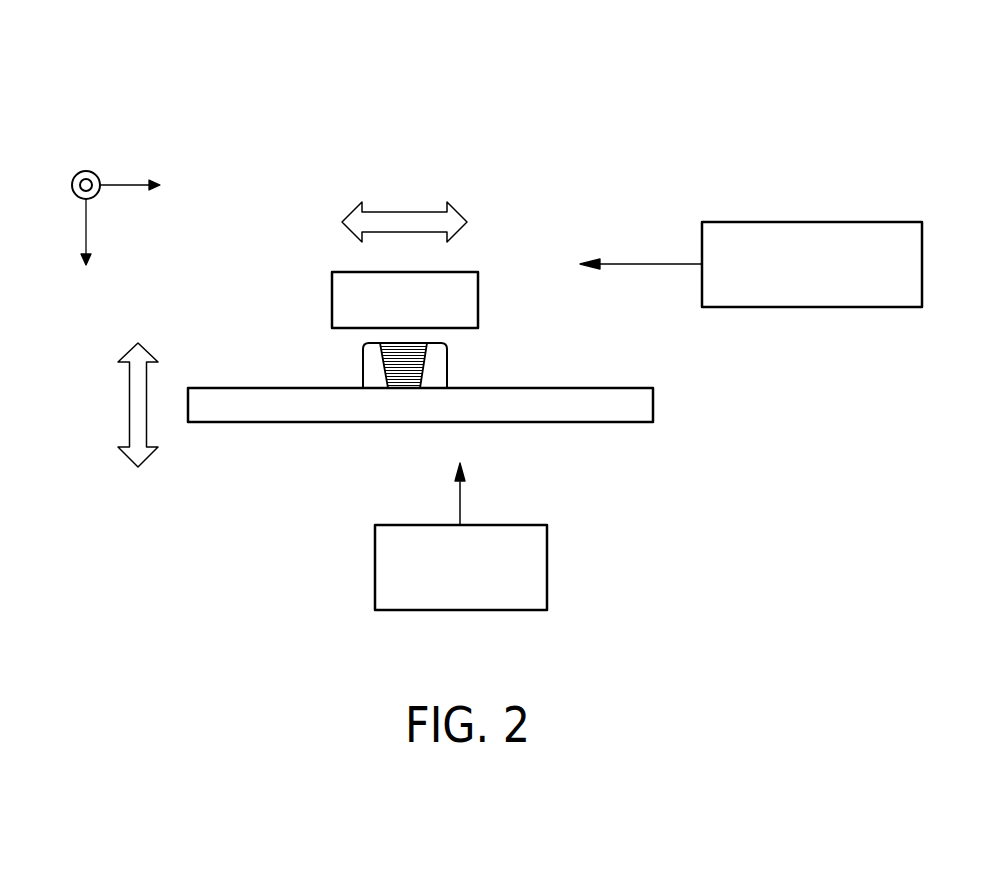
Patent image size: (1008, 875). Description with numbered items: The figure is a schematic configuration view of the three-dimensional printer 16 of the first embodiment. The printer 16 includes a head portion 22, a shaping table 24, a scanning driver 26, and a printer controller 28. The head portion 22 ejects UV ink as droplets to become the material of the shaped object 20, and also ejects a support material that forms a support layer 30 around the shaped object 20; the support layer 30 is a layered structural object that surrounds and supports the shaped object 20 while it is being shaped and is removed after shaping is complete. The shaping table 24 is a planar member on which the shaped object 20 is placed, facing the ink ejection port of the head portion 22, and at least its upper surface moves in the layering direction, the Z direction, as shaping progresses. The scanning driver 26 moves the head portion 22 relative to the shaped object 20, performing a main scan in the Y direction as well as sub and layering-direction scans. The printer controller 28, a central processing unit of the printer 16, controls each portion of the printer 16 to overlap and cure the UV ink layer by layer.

The 3D printer 16 is at (540, 92).
The shaped object 20 is at (424, 363).
The head portion 22 is at (332, 298).
The shaping table 24 is at (608, 422).
The scanning driver 26 is at (812, 222).
The 3D printer controller 28 is at (547, 567).
The support layer 30 is at (363, 370).